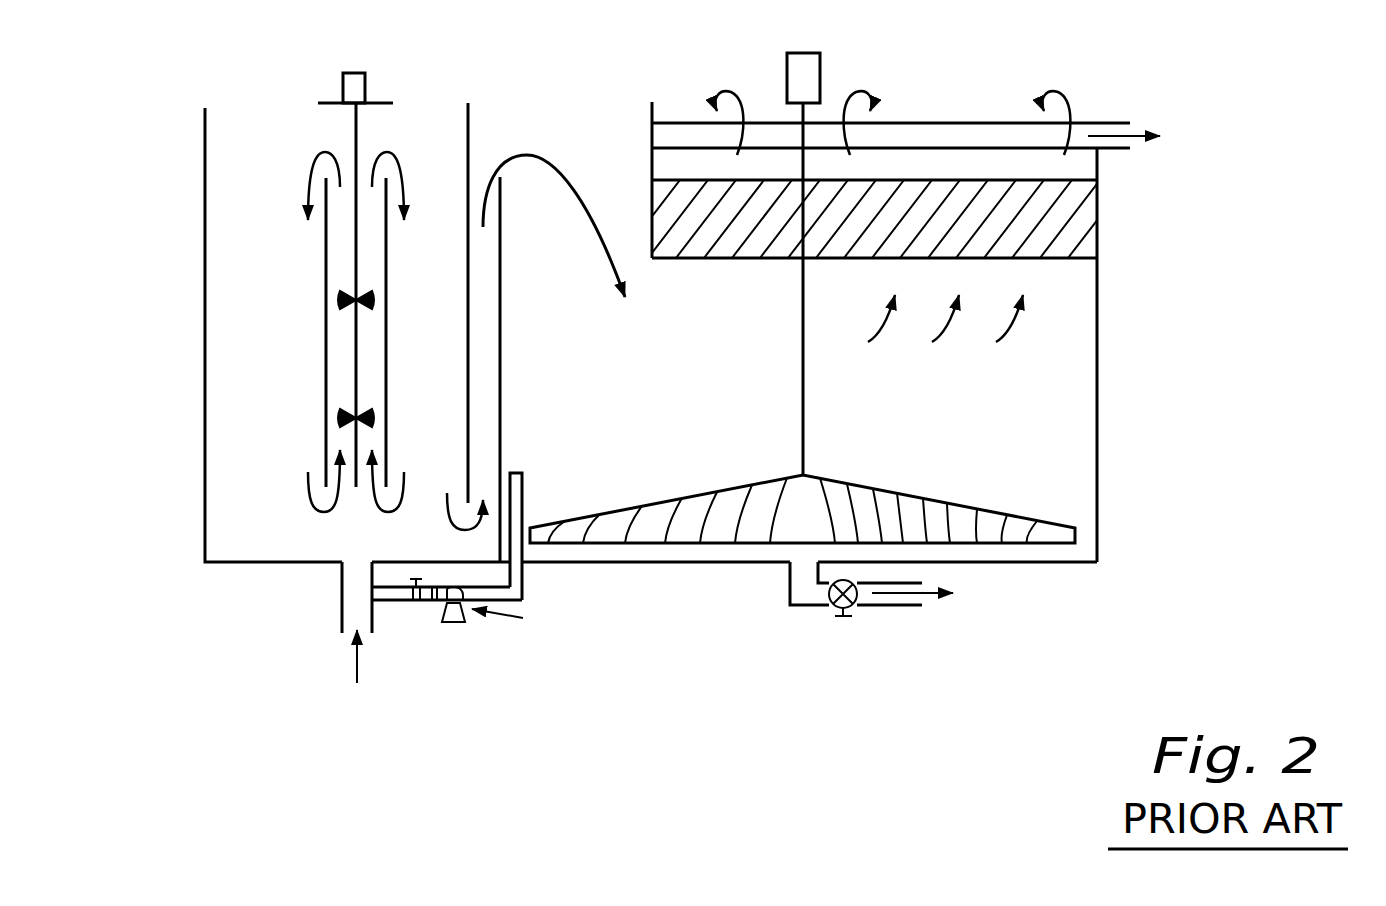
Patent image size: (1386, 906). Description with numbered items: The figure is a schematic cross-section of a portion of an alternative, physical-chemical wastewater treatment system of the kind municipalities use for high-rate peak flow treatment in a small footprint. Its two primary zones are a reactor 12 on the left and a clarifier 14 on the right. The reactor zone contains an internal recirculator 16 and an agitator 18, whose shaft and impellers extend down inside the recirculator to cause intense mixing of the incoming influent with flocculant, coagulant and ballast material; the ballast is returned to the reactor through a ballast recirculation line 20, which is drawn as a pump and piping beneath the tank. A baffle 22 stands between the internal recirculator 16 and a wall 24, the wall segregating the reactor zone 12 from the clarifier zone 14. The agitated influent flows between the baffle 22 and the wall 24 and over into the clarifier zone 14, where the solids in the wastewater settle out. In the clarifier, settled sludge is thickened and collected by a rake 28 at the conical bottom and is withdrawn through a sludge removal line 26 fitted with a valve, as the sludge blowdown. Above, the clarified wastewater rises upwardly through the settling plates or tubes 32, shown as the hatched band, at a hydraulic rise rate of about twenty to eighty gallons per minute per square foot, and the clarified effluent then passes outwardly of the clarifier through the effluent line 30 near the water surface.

The reactor 12 is at (155, 215).
The clarifier 14 is at (1137, 317).
The internal recirculator 16 is at (326, 350).
The agitator 18 is at (357, 145).
The ballast recirculation line 20 is at (428, 603).
The baffle 22 is at (472, 147).
The wall 24 is at (502, 242).
The sludge removal line 26 is at (872, 607).
The rake 28 is at (1013, 515).
The effluent line 30 is at (1085, 120).
The settling plates or tubes 32 is at (938, 183).